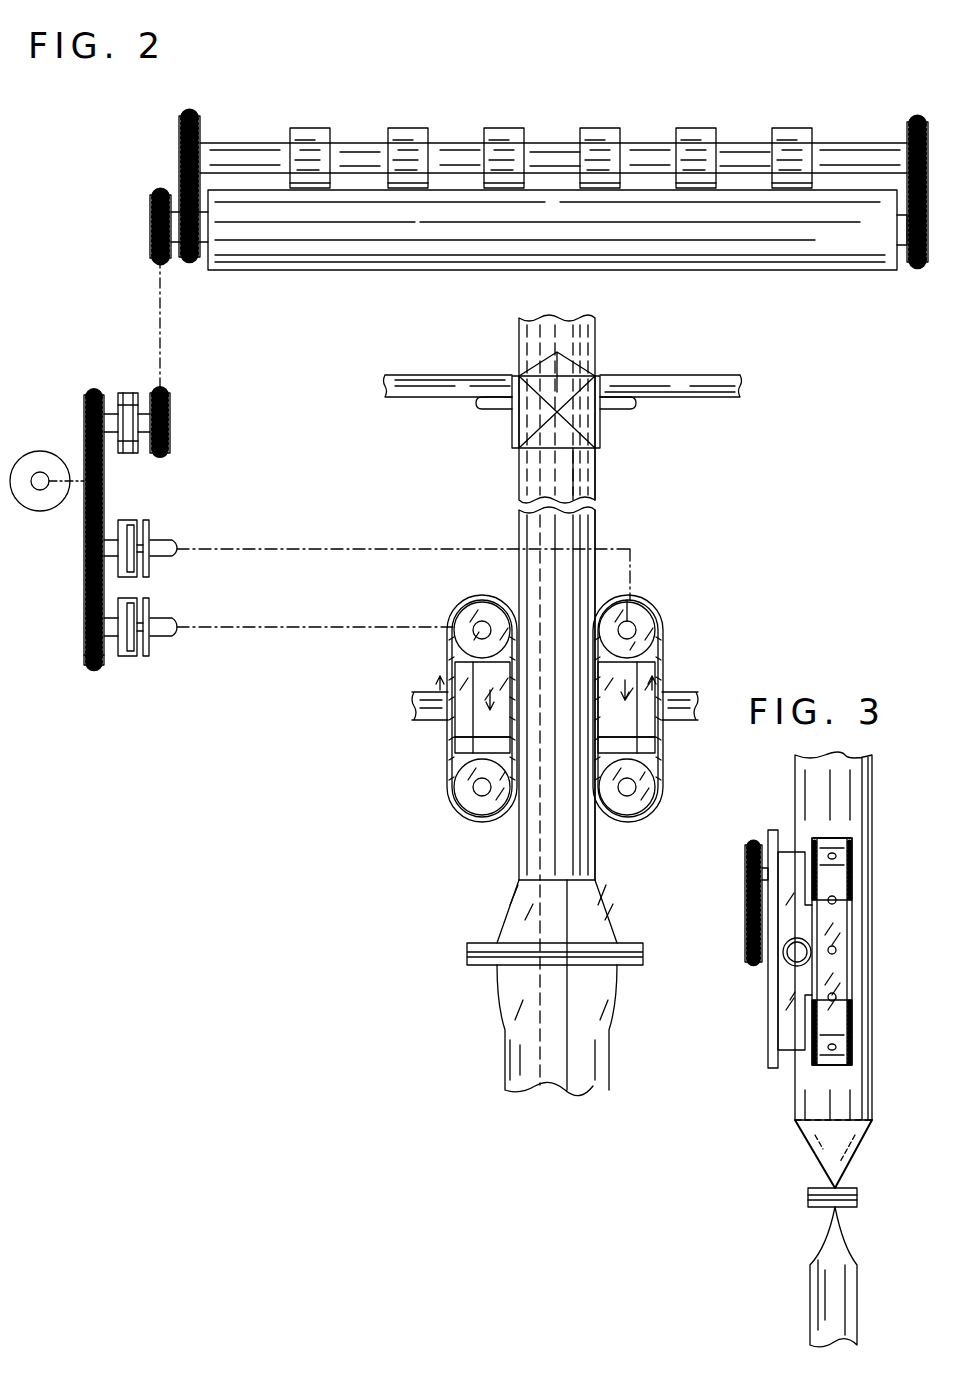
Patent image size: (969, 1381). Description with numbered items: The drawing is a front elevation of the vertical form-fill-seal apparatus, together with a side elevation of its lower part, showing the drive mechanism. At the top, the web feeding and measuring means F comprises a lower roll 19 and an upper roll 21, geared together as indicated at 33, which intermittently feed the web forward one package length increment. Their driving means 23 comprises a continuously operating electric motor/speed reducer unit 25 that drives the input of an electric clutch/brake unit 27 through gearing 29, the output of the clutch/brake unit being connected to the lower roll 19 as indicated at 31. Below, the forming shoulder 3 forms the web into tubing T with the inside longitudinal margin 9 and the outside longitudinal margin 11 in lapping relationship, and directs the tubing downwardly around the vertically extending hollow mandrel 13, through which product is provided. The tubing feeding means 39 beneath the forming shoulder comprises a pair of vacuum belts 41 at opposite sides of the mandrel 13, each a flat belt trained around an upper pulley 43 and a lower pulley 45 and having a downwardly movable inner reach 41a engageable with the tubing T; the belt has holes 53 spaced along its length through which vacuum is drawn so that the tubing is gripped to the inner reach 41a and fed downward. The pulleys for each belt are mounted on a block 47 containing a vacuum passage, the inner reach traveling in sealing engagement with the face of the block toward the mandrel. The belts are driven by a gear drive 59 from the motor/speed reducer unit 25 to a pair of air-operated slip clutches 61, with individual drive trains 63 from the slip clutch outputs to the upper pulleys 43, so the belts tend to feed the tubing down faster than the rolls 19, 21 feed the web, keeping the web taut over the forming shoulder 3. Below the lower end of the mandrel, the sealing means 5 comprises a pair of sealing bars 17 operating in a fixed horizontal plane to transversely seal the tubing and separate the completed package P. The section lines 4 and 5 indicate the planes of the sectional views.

In FIG. 2, the forming shoulder 3 is at (512, 390).
In FIG. 2, the section line 4- 4 is at (500, 441).
In FIG. 2, the sealing means 5 is at (510, 575).
In FIG. 3, the sealing means 5 is at (805, 1212).
In FIG. 2, the longitudinal margin 9 is at (540, 482).
In FIG. 2, the longitudinal margin 11 is at (590, 488).
In FIG. 2, the hollow mandrel 13 is at (580, 335).
In FIG. 3, the hollow mandrel 13 is at (855, 1150).
In FIG. 2, the sealing bars 17 is at (636, 965).
In FIG. 3, the sealing bars 17 is at (808, 1188).
In FIG. 2, the lower roll 19 is at (350, 272).
In FIG. 2, the upper roll 21 is at (398, 128).
In FIG. 2, the driving means 23 is at (150, 323).
In FIG. 2, the electric motor/speed reducer unit 25 is at (24, 512).
In FIG. 2, the electric clutch/brake unit 27 is at (122, 393).
In FIG. 2, the gearing 29 is at (84, 412).
In FIG. 2, the output connection 31 is at (150, 212).
In FIG. 2, the gearing 33 is at (178, 129).
In FIG. 2, the tubing feeding means 39 is at (541, 709).
In FIG. 2, the vacuum belt 41 is at (452, 668).
In FIG. 3, the vacuum belt 41 is at (840, 930).
In FIG. 2, the inner reach 41a is at (455, 737).
In FIG. 2, the upper pulley 43 is at (470, 620).
In FIG. 3, the upper pulley 43 is at (852, 868).
In FIG. 2, the lower pulley 45 is at (460, 788).
In FIG. 3, the lower pulley 45 is at (852, 1050).
In FIG. 3, the block 47 is at (793, 984).
In FIG. 2, the holes 53 is at (455, 818).
In FIG. 3, the holes 53 is at (836, 997).
In FIG. 2, the gear drive 59 is at (90, 667).
In FIG. 2, the slip clutch 61 is at (145, 520).
In FIG. 2, the drive train 63 is at (300, 549).
In FIG. 3, the drive train 63 is at (745, 880).
In FIG. 2, the web feeding and measuring means F is at (805, 122).
In FIG. 2, the tubing T is at (597, 535).
In FIG. 3, the tubing T is at (872, 1040).
In FIG. 2, the package P is at (505, 1065).
In FIG. 3, the package P is at (825, 1318).